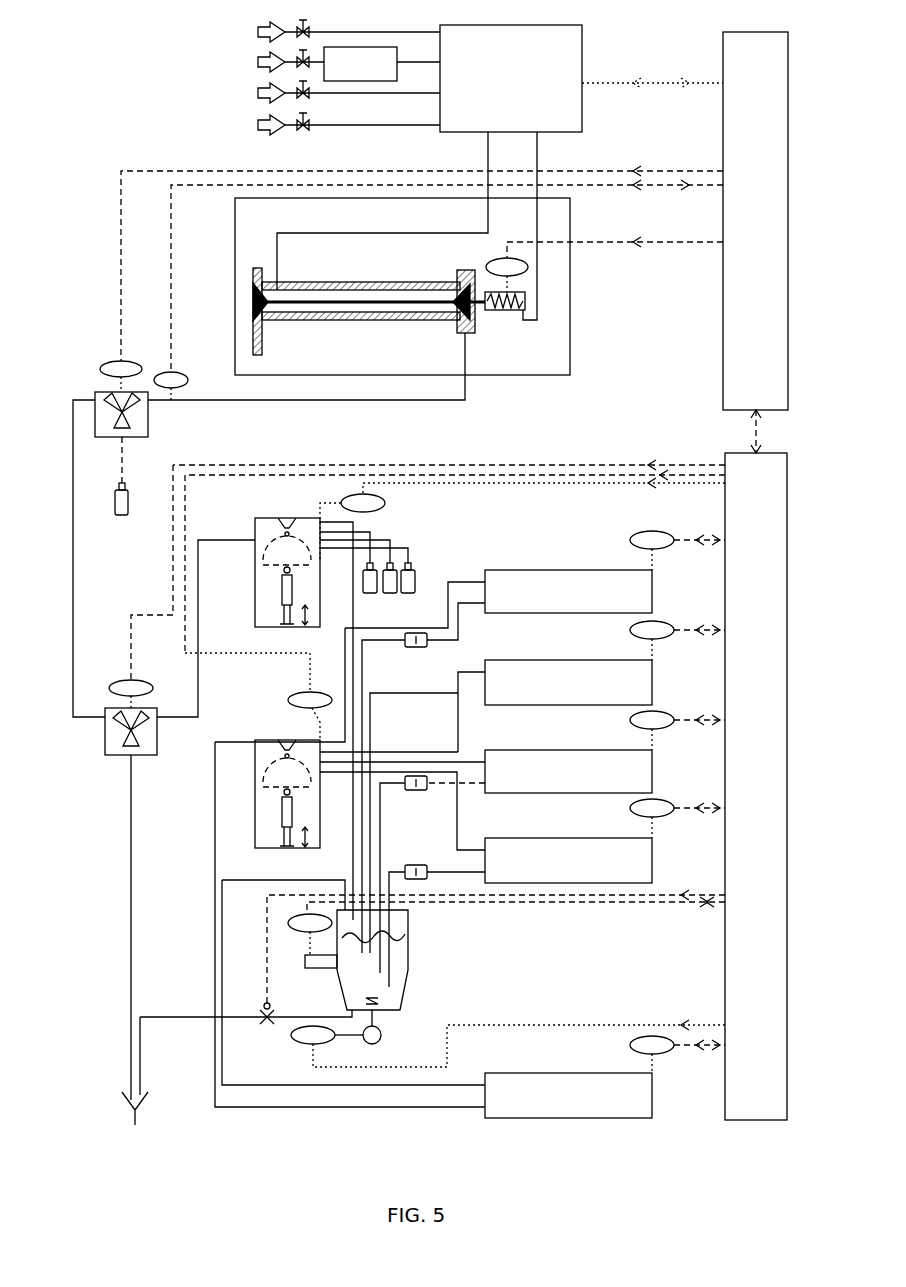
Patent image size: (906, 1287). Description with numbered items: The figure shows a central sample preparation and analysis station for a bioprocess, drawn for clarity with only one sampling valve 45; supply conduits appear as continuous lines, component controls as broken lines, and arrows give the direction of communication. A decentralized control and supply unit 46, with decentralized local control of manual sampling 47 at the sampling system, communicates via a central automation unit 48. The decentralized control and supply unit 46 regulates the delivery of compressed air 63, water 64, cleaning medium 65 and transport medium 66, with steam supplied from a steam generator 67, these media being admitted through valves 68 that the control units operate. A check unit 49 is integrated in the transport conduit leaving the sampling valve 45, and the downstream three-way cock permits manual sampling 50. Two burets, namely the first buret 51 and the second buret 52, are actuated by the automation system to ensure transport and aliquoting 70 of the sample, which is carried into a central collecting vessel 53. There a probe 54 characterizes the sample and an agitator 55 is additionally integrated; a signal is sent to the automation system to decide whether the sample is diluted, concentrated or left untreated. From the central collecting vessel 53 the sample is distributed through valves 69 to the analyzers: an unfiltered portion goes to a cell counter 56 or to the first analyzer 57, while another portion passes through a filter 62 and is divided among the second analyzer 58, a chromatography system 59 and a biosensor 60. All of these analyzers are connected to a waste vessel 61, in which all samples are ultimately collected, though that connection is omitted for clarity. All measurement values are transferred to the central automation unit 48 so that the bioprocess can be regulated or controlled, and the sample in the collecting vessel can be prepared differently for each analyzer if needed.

The sampling valve 45 is at (359, 299).
The decentralized control and supply unit 46 is at (500, 172).
The decentralized local control of manual sampling 47 is at (454, 242).
The central automation unit 48 is at (480, 786).
The check unit 49 is at (140, 533).
The manual sampling 50 is at (120, 491).
The buret 1 51 is at (331, 705).
The buret 2 52 is at (350, 739).
The central collecting vessel 53 is at (289, 948).
The probe 54 is at (321, 975).
The agitator 55 is at (375, 1023).
The cell counter 56 is at (433, 930).
The analyzer 1 57 is at (511, 806).
The analyzer 2 58 is at (516, 861).
The chromatography system 59 is at (520, 912).
The biosensor 60 is at (498, 605).
The waste vessel 61 is at (146, 941).
The filter 62 is at (394, 793).
The compressed air 63 is at (333, 32).
The water 64 is at (333, 62).
The cleaning medium 65 is at (333, 93).
The transport medium 66 is at (333, 125).
The steam generator 67 is at (360, 64).
The valve 68 is at (309, 475).
The valve 69 is at (498, 784).
The aliquoting 70 is at (405, 568).